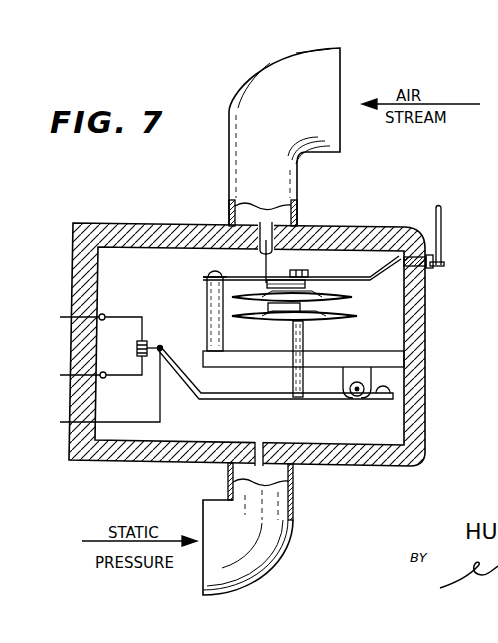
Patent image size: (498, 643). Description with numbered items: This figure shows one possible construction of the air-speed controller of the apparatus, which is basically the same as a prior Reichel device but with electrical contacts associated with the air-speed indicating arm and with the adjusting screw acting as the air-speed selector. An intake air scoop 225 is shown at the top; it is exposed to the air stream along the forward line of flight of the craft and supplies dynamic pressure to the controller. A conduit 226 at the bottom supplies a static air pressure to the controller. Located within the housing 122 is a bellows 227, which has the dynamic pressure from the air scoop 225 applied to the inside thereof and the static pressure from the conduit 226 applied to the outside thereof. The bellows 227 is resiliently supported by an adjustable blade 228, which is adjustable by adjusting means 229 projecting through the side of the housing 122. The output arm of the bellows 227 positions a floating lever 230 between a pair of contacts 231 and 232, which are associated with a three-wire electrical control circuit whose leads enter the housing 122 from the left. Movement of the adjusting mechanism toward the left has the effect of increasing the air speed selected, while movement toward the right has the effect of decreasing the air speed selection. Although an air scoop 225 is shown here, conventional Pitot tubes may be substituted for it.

The housing 122 is at (121, 223).
The intake air scoop 225 is at (345, 66).
The conduit 226 is at (265, 557).
The bellows 227 is at (316, 319).
The adjustable blade 228 is at (304, 281).
The adjusting means 229 is at (443, 233).
The floating lever 230 is at (270, 399).
The contact 231 is at (146, 336).
The contact 232 is at (143, 357).